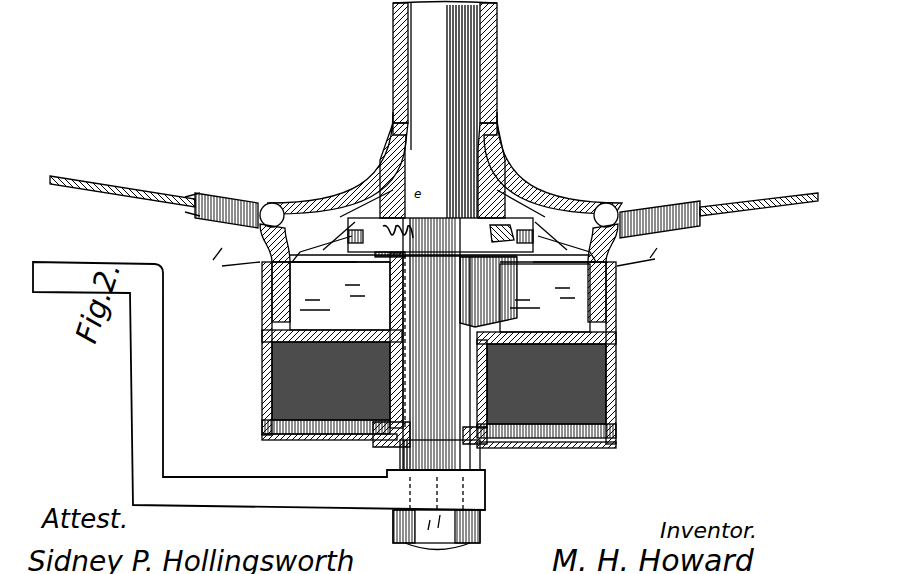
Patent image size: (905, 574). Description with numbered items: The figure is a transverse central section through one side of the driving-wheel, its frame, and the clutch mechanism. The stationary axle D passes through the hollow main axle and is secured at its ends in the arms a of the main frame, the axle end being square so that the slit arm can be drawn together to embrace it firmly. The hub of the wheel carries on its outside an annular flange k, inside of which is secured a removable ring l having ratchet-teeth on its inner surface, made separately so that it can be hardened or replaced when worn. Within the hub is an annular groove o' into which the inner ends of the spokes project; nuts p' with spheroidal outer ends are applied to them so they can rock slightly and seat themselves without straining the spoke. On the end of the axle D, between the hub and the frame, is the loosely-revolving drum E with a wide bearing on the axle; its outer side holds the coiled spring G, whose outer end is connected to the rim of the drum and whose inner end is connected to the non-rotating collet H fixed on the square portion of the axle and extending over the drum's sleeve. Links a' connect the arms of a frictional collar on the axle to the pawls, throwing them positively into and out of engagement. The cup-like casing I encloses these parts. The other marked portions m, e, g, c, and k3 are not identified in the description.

The stationary axle D is at (445, 110).
The nuts p' is at (434, 206).
The annular groove o' is at (439, 201).
The annular flange k is at (262, 281).
The drum E is at (612, 338).
The chambers m is at (440, 293).
The field coils e is at (292, 377).
The removable ring l is at (272, 312).
The spring g is at (440, 235).
The pawl c is at (485, 235).
The links a' is at (435, 228).
The casing I is at (264, 437).
The coiled spring G is at (322, 428).
The collet H is at (477, 440).
The arms a is at (259, 386).
The pipe connection k3 is at (614, 318).